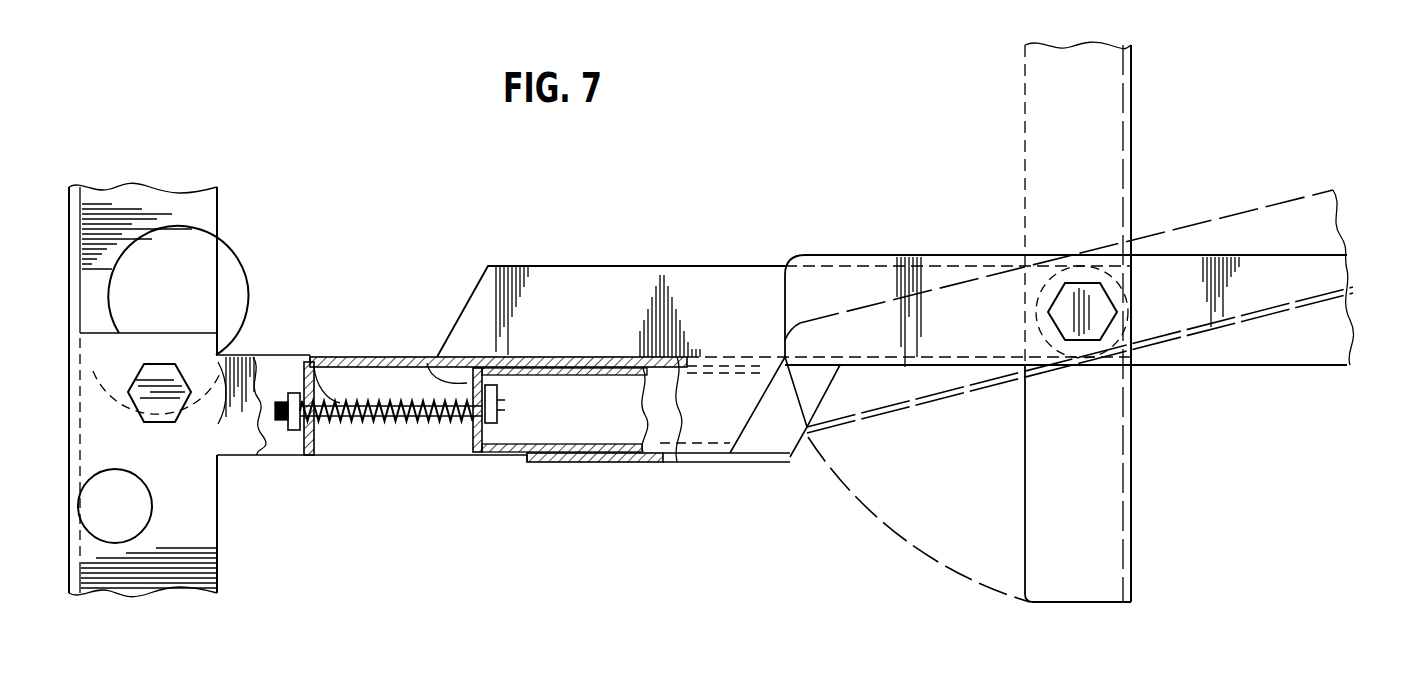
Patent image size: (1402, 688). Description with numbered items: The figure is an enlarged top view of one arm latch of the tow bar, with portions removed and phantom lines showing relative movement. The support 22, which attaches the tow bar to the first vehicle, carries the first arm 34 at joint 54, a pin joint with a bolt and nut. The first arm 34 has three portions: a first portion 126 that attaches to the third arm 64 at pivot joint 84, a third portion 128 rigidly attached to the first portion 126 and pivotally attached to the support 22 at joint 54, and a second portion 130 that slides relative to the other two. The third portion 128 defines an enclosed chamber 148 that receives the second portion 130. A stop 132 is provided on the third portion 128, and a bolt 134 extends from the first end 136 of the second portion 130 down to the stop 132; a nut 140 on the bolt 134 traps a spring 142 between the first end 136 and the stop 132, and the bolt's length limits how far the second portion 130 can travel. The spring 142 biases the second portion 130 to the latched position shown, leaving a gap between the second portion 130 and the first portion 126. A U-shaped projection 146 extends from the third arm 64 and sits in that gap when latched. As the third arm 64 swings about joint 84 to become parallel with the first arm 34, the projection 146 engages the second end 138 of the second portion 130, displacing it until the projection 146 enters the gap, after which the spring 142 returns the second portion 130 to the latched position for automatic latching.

The support 22 is at (69, 271).
The joint 54 is at (129, 389).
The nut 140 is at (278, 360).
The stop 132 is at (337, 363).
The spring 142 is at (357, 403).
The first end 136 is at (430, 363).
The enclosed chamber 148 is at (343, 440).
The third portion 128 is at (402, 457).
The second portion 130 is at (478, 455).
The first arm 34 is at (530, 266).
The first portion 126 is at (640, 266).
The bolt 134 is at (506, 413).
The projection 146 is at (850, 252).
The joint 84 is at (1092, 283).
The third arm 64 is at (1322, 230).
The second end 138 is at (778, 455).